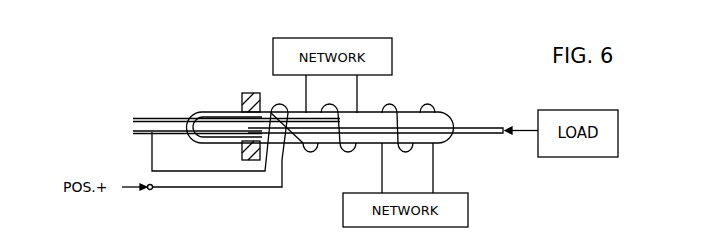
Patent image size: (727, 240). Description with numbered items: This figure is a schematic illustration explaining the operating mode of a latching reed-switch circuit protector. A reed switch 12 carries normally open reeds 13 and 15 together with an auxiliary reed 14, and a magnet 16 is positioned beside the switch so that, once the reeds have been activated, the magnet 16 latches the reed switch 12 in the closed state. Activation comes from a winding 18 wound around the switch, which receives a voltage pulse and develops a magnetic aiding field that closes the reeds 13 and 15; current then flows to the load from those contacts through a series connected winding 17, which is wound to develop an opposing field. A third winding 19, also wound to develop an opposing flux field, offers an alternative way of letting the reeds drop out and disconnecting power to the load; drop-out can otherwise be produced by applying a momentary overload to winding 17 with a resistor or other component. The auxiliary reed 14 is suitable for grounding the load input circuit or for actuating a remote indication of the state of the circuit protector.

The reed switch 12 is at (450, 114).
The reed 13 is at (478, 134).
The reed 14 is at (145, 117).
The reed 15 is at (135, 133).
The magnet 16 is at (247, 93).
The winding 17 is at (283, 104).
The winding 18 is at (348, 152).
The third winding 19 is at (416, 143).